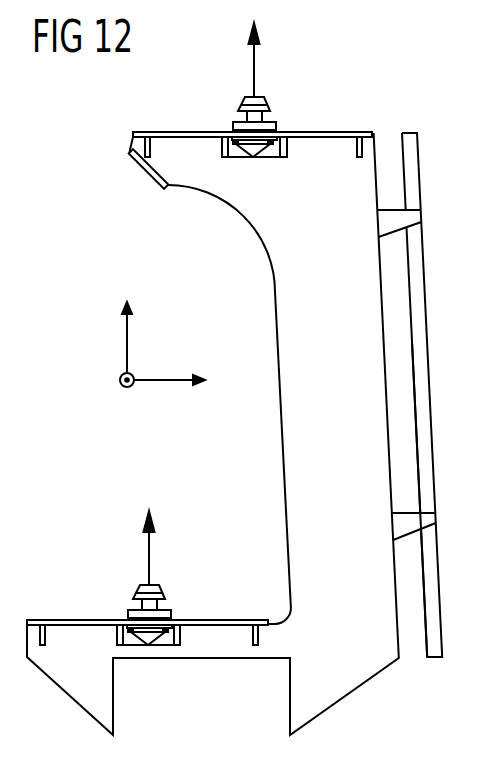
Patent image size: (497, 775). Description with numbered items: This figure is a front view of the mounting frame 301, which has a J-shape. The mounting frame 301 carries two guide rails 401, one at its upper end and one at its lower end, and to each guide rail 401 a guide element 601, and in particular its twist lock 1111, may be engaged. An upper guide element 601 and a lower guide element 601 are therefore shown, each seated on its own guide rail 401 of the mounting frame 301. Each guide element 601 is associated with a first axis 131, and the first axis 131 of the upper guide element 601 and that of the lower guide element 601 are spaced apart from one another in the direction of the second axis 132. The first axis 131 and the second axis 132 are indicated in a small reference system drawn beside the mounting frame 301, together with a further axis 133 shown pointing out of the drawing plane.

The first axis 131 is at (253, 73).
The second axis 132 is at (160, 379).
The third direction (axis out of plane) 133 is at (121, 386).
The mounting frame 301 is at (317, 397).
The guide rail 401 is at (240, 152).
The guide element 601 is at (258, 343).
The twist lock 1111 is at (267, 102).